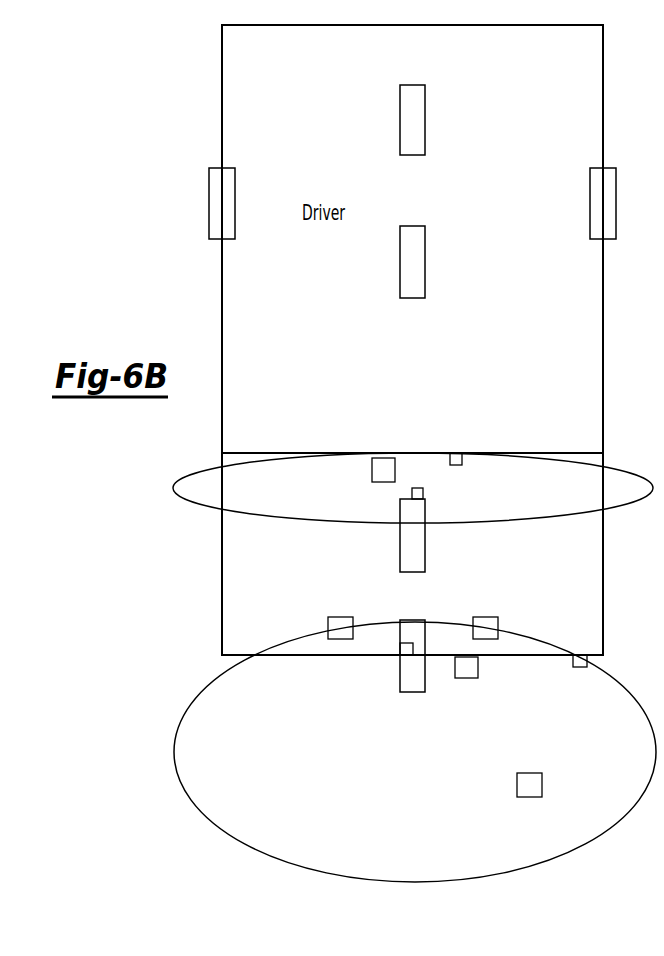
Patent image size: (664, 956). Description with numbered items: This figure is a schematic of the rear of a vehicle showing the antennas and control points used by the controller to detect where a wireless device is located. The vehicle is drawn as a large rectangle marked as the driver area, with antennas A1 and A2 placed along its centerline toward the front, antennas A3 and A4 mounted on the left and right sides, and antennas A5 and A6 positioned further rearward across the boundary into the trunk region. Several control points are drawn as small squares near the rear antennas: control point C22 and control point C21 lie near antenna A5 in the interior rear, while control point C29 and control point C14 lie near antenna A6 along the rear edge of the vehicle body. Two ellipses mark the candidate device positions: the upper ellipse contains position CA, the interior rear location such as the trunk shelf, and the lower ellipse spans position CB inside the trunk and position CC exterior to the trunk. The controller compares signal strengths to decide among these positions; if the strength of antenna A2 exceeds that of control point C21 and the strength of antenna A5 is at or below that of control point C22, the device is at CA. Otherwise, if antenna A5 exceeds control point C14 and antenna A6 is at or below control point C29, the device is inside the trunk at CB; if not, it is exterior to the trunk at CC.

The antenna A1 is at (412, 120).
The antenna A2 is at (412, 262).
The antenna A3 is at (222, 203).
The antenna A4 is at (603, 203).
The antenna A5 is at (412, 535).
The antenna A6 is at (412, 656).
The interior rear position CA is at (383, 470).
The trunk position CB is at (413, 628).
The exterior trunk position CC is at (498, 727).
The control point C22 is at (471, 465).
The control point C21 is at (434, 493).
The control point C29 is at (391, 646).
The control point C14 is at (580, 673).